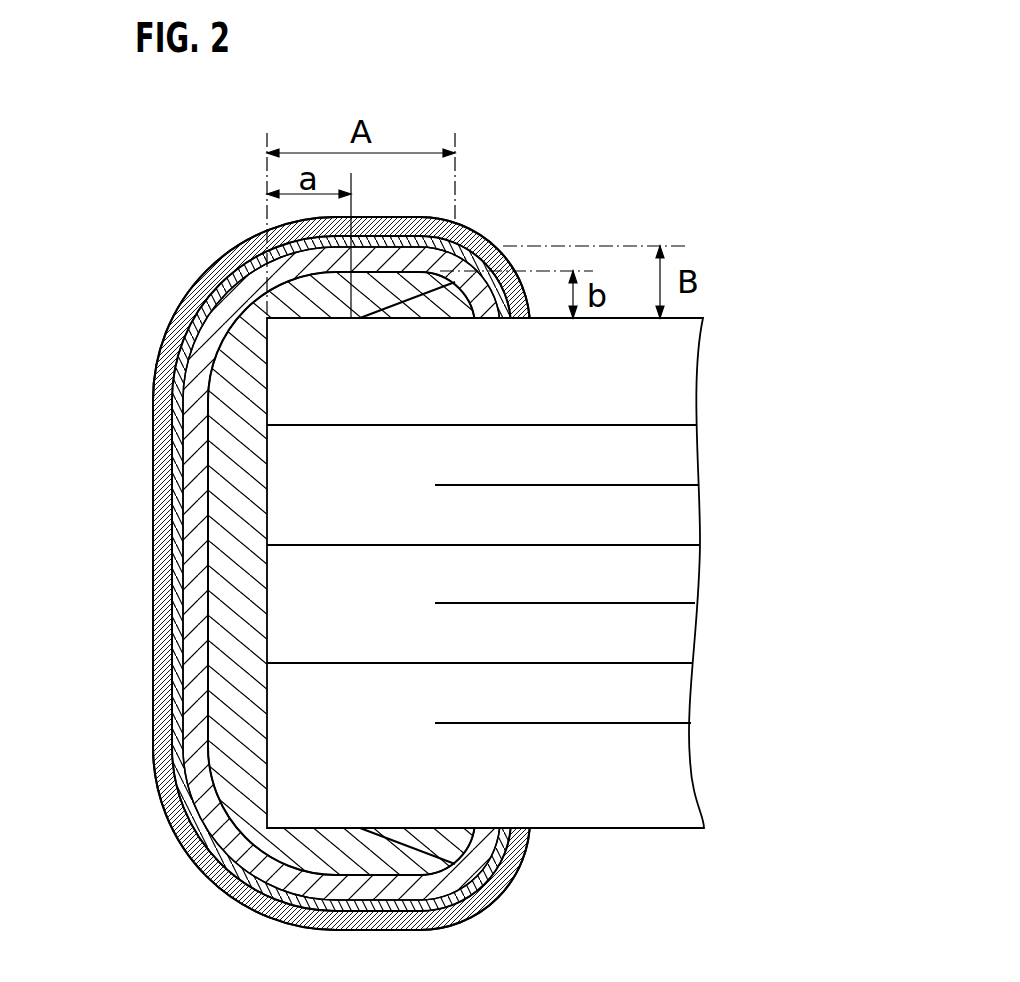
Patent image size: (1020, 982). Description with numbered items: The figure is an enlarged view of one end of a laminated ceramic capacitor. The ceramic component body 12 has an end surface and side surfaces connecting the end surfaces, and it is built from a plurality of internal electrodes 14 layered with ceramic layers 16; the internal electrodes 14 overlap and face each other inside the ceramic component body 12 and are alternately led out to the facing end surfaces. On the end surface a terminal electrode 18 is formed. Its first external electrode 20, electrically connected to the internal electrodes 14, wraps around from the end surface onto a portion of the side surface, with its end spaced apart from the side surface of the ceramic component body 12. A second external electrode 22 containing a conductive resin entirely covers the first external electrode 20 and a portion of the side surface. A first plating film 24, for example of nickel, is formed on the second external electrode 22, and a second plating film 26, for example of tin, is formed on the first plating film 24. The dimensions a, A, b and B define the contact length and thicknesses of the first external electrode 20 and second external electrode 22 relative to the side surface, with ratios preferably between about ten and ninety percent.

The ceramic component body 12 is at (673, 828).
The internal electrodes 14 is at (632, 603).
The ceramic layers 16 is at (662, 693).
The terminal electrode 18 is at (156, 368).
The first external electrode 20 is at (237, 443).
The second external electrode 22 is at (193, 497).
The first plating film 24 is at (180, 557).
The second plating film 26 is at (162, 610).